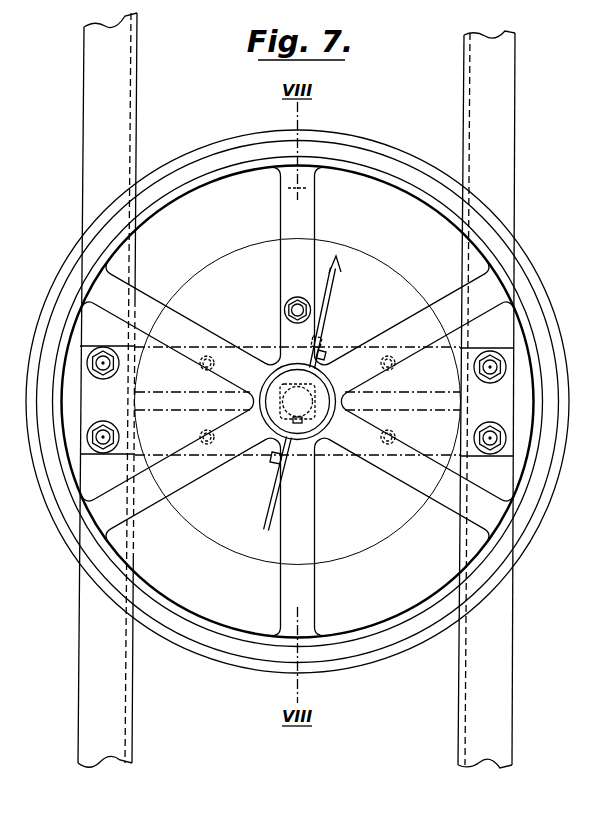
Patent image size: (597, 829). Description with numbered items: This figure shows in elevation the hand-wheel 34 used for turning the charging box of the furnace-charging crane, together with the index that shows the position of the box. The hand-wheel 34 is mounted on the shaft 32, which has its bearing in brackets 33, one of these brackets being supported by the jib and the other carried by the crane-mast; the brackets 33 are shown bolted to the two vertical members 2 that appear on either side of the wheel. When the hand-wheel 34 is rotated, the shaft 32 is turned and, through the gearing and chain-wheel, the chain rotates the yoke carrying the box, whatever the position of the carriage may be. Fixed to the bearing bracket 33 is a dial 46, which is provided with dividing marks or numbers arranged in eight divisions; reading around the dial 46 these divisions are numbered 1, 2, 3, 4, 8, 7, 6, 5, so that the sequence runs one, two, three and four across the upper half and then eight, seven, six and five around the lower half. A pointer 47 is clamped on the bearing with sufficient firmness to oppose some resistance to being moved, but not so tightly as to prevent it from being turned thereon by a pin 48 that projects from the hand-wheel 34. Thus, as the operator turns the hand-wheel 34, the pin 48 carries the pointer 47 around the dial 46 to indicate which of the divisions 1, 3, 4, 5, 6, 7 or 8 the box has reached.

The rail 2 is at (296, 390).
The shaft 32 is at (298, 402).
The brackets 33 is at (296, 401).
The hand-wheel 34 is at (192, 172).
The dial 46 is at (297, 401).
The pointer 47 is at (326, 313).
The pin 48 is at (291, 309).
The dial division 1 is at (368, 273).
The dial division 3 is at (420, 472).
The dial division 4 is at (333, 542).
The dial division 5 is at (228, 273).
The dial division 6 is at (153, 364).
The dial division 7 is at (168, 474).
The dial division 8 is at (259, 541).